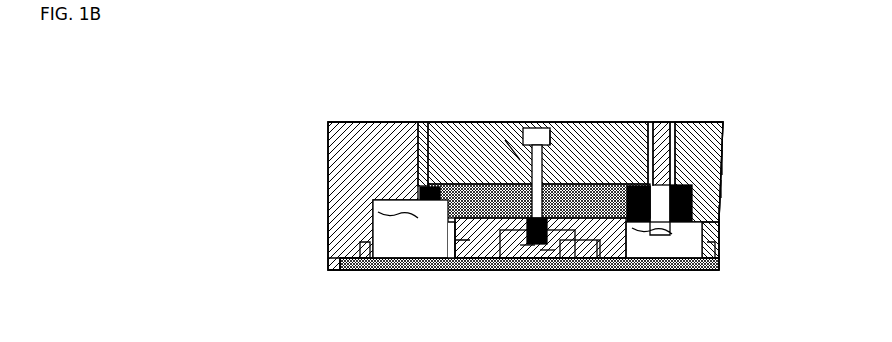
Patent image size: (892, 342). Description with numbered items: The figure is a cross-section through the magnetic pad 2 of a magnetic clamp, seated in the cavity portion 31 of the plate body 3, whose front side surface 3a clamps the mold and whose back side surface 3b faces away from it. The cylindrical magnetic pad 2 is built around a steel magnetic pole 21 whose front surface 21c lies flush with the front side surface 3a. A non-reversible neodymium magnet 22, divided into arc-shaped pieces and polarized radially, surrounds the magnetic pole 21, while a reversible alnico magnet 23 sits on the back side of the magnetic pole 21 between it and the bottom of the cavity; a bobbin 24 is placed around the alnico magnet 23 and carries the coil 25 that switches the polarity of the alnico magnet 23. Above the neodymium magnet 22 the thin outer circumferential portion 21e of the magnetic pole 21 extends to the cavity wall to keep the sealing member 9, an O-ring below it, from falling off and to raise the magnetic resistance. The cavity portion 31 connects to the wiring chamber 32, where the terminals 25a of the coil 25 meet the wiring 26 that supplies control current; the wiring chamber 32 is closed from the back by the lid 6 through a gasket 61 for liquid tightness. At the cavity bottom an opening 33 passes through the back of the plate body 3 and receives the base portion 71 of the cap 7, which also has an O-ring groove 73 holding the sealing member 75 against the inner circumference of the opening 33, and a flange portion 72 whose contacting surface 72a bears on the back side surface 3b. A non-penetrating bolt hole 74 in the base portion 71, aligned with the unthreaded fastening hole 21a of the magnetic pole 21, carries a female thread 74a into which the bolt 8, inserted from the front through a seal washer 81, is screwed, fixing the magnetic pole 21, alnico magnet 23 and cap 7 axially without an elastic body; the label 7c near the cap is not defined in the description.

The magnetic pad 2 is at (552, 127).
The plate body 3 is at (327, 178).
The front side surface 3a is at (360, 122).
The back side surface 3b is at (347, 272).
The lid 6 is at (397, 270).
The cap 7 is at (513, 277).
The center axis of fastening member 7c is at (537, 270).
The bolt 8 is at (532, 124).
The sealing member 9 is at (327, 233).
The magnetic pole 21 is at (617, 122).
The fastening hole 21a is at (516, 156).
The front surface 21c is at (476, 122).
The outer circumferential portion 21e is at (660, 124).
The neodymium magnet 22 is at (708, 124).
The alnico magnet 23 is at (721, 162).
The bobbin 24 is at (719, 188).
The coil 25 is at (720, 214).
The terminals 25a is at (645, 270).
The wiring 26 is at (673, 270).
The cavity portion 31 is at (426, 124).
The wiring chamber 32 is at (407, 229).
The opening 33 is at (664, 240).
The gasket 61 is at (420, 135).
The base portion 71 is at (455, 264).
The flange portion 72 is at (585, 265).
The contacting surface 72a is at (597, 263).
The O-ring groove 73 is at (543, 270).
The bolt hole 74 is at (530, 272).
The female thread 74a is at (520, 270).
The sealing member 75 is at (478, 270).
The sealing member 81 is at (555, 144).